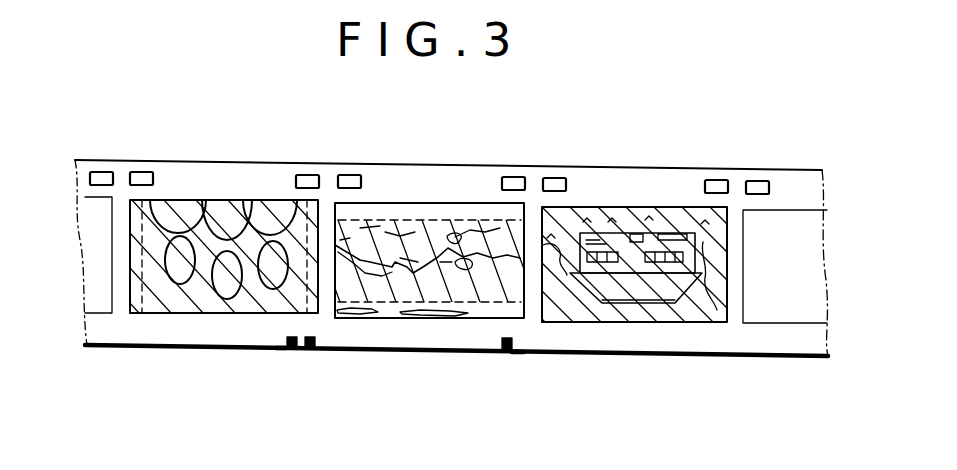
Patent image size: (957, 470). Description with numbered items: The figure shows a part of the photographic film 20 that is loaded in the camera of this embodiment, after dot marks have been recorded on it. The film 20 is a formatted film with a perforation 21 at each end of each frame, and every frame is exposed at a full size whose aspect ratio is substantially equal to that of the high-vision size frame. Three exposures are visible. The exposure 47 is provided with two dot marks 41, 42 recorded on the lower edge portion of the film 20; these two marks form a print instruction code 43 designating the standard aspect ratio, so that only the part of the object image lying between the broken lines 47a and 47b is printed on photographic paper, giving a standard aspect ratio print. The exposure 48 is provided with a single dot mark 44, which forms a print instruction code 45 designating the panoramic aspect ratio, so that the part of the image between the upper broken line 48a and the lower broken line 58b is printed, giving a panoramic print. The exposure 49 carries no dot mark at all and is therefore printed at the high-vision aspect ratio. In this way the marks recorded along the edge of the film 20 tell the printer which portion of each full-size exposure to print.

The photographic film 20 is at (650, 162).
The perforations 21 is at (551, 177).
The dot mark 41 is at (290, 349).
The dot mark 42 is at (310, 349).
The print instruction code 43 is at (280, 358).
The dot mark 44 is at (506, 353).
The print instruction code 45 is at (521, 358).
The exposure 47 is at (222, 200).
The broken line 47a is at (142, 215).
The broken line 47b is at (292, 228).
The exposure 48 is at (452, 203).
The broken line 48a is at (376, 222).
The exposure 49 is at (608, 207).
The frame lower boundary 58b is at (480, 316).